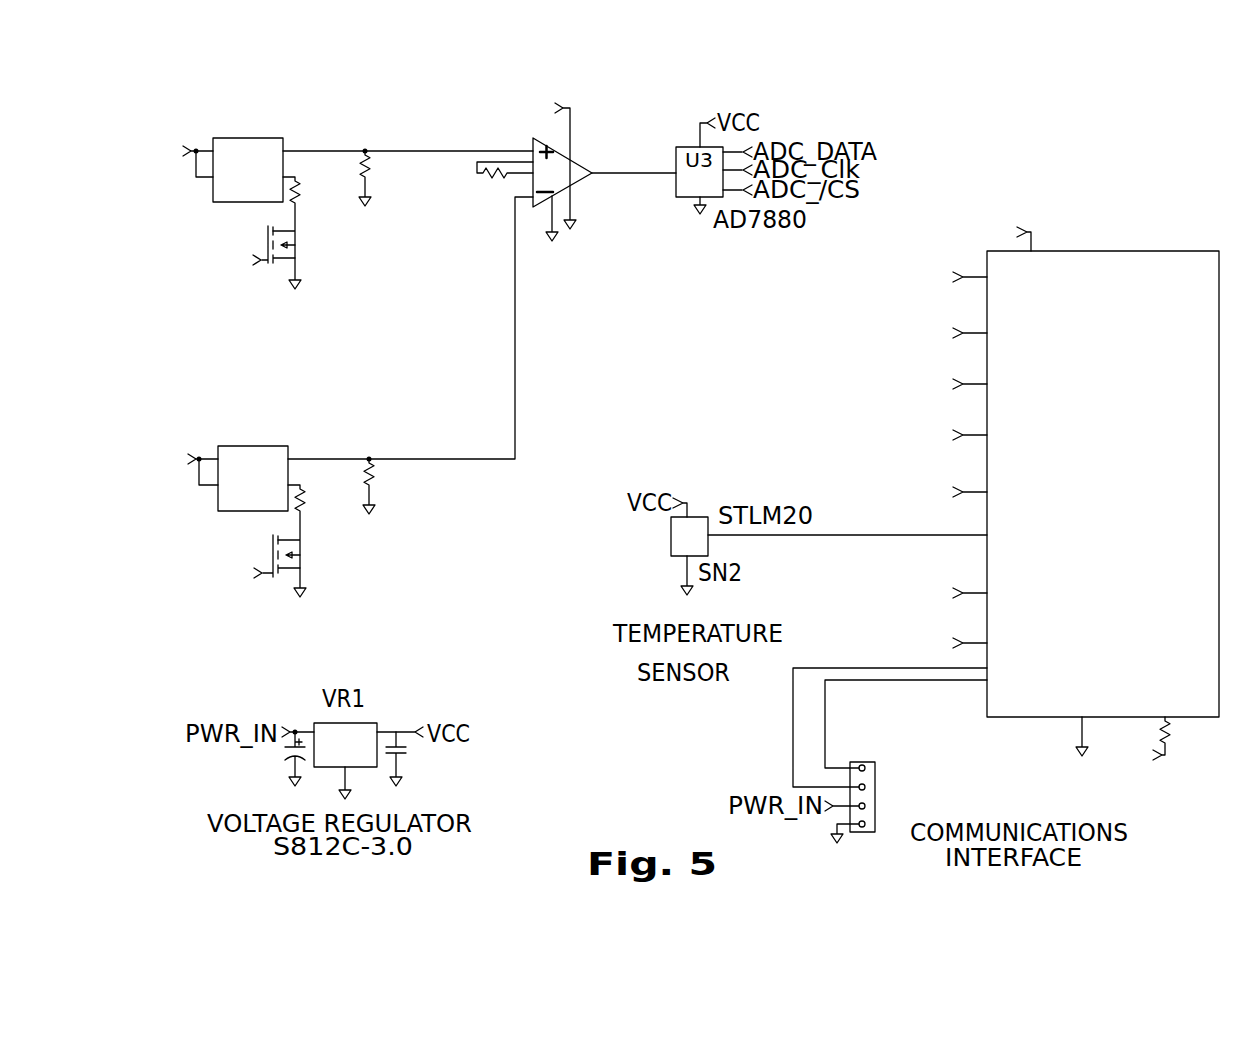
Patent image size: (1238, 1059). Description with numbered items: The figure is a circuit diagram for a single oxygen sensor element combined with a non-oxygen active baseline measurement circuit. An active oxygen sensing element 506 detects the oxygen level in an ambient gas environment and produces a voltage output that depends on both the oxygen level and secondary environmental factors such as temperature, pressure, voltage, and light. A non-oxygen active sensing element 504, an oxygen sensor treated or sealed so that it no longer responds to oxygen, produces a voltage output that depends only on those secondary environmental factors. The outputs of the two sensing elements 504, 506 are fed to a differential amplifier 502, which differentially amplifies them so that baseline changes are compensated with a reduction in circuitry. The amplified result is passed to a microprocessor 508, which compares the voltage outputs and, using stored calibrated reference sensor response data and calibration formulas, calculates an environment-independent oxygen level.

The differential amplifier 502 is at (595, 144).
The non-oxygen active sensing element 504 is at (214, 435).
The active oxygen sensing element 506 is at (211, 126).
The microprocessor 508 is at (1136, 227).